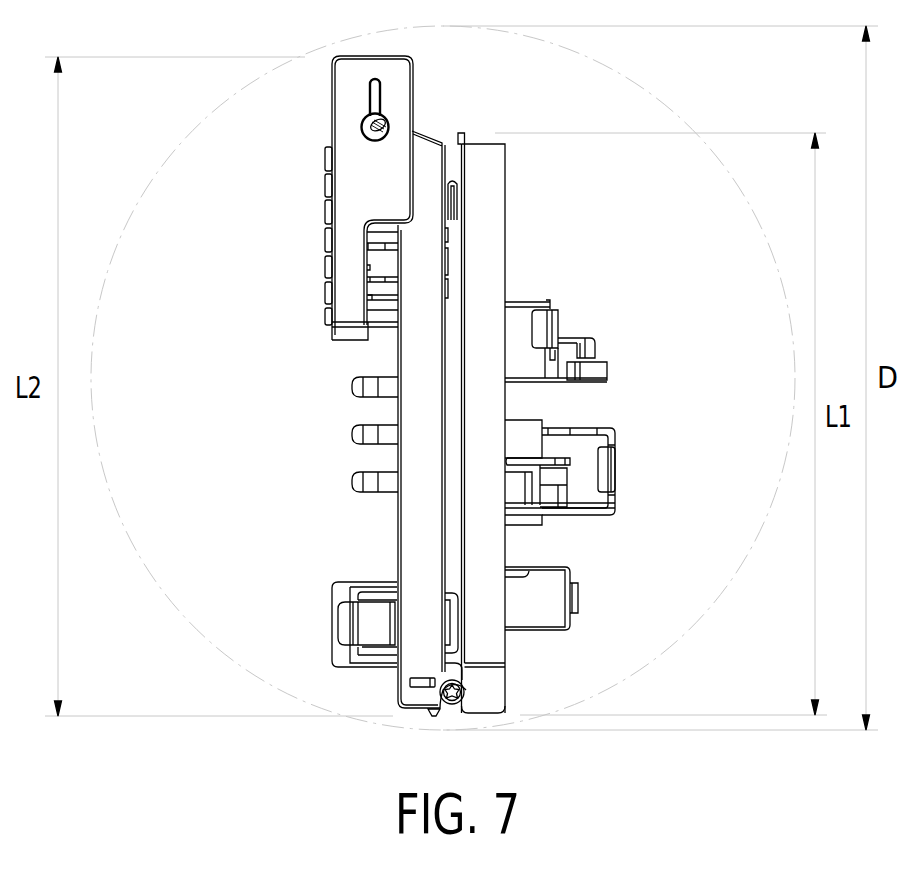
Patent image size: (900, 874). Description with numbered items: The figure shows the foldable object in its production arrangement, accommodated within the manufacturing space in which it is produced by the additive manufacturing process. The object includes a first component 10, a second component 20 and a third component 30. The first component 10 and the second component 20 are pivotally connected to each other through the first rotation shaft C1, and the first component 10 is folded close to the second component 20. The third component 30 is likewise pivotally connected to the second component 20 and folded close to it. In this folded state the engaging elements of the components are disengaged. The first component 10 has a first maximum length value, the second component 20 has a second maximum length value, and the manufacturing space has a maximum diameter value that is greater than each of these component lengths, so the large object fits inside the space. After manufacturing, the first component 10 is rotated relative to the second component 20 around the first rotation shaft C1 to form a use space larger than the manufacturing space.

The first component 10 is at (492, 247).
The second component 20 is at (417, 518).
The third component 30 is at (377, 190).
The first rotation shaft C1 is at (449, 706).